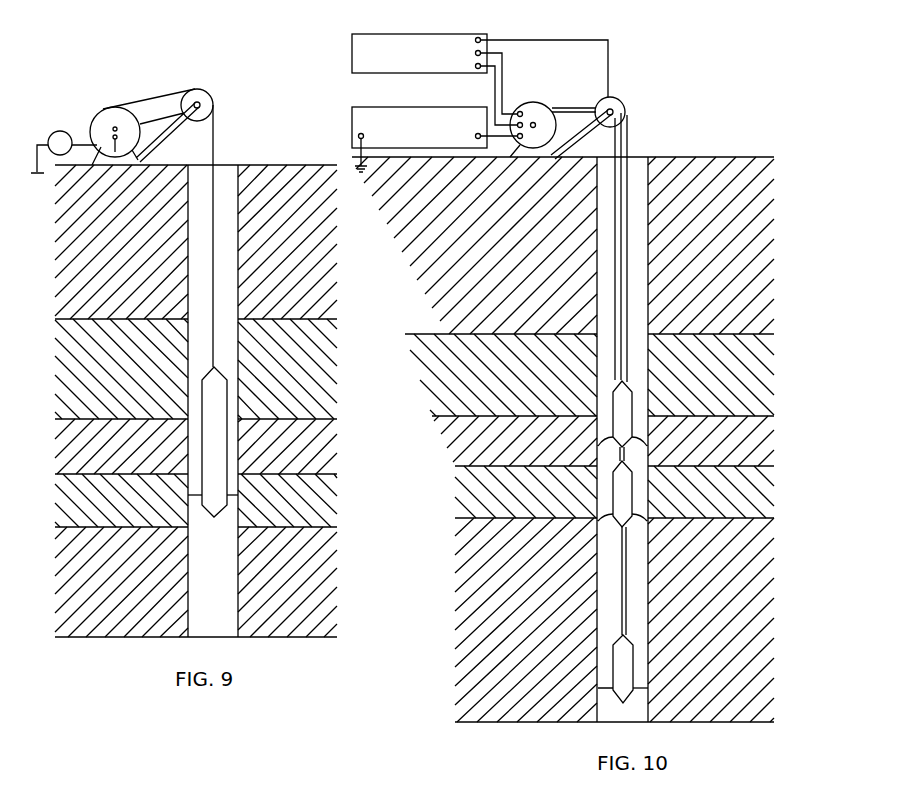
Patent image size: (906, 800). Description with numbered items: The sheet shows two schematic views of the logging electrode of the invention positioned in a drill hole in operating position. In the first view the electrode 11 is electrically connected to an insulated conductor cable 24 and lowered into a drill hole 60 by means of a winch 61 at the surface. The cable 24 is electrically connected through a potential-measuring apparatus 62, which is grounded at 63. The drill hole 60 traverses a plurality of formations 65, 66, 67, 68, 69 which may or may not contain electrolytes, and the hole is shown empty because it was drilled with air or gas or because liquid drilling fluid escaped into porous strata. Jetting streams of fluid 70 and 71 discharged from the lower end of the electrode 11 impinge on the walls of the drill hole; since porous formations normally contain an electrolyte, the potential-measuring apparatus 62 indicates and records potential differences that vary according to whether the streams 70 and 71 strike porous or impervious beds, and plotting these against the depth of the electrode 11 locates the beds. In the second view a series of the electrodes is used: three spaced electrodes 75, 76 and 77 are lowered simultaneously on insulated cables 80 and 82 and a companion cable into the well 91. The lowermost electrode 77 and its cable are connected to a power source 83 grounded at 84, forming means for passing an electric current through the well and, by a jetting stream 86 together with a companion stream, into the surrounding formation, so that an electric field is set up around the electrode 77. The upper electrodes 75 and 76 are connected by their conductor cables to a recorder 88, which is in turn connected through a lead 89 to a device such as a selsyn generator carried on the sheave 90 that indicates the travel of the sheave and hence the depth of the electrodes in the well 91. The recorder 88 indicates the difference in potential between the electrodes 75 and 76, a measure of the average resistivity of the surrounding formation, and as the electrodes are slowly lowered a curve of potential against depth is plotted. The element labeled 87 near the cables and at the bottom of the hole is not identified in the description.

In FIG. 9, the electrode 11 is at (215, 371).
In FIG. 9, the insulated conductor cable 24 is at (213, 117).
In FIG. 9, the drill hole 60 is at (229, 173).
In FIG. 9, the winch 61 is at (110, 117).
In FIG. 9, the potential-measuring apparatus 62 is at (62, 131).
In FIG. 9, the ground 63 is at (34, 166).
In FIG. 9, the formation 65 is at (322, 285).
In FIG. 9, the formation 66 is at (325, 375).
In FIG. 9, the formation 67 is at (325, 453).
In FIG. 9, the formation 68 is at (323, 498).
In FIG. 9, the formation 69 is at (325, 568).
In FIG. 9, the jetting stream of fluid 70 is at (194, 498).
In FIG. 9, the jetting stream of fluid 71 is at (230, 498).
In FIG. 10, the electrode 75 is at (627, 392).
In FIG. 10, the electrode 76 is at (624, 462).
In FIG. 10, the lowermost electrode 77 is at (625, 642).
In FIG. 10, the insulated cable 80 is at (625, 125).
In FIG. 10, the insulated cable 82 is at (628, 150).
In FIG. 10, the power source 83 is at (352, 110).
In FIG. 10, the ground 84 is at (347, 160).
In FIG. 10, the jetting stream 86 is at (641, 690).
In FIG. 10, the cable conductor 87 is at (625, 138).
In FIG. 10, the recorder 88 is at (395, 34).
In FIG. 10, the lead 89 is at (535, 40).
In FIG. 10, the sheave 90 is at (615, 106).
In FIG. 10, the well 91 is at (610, 170).